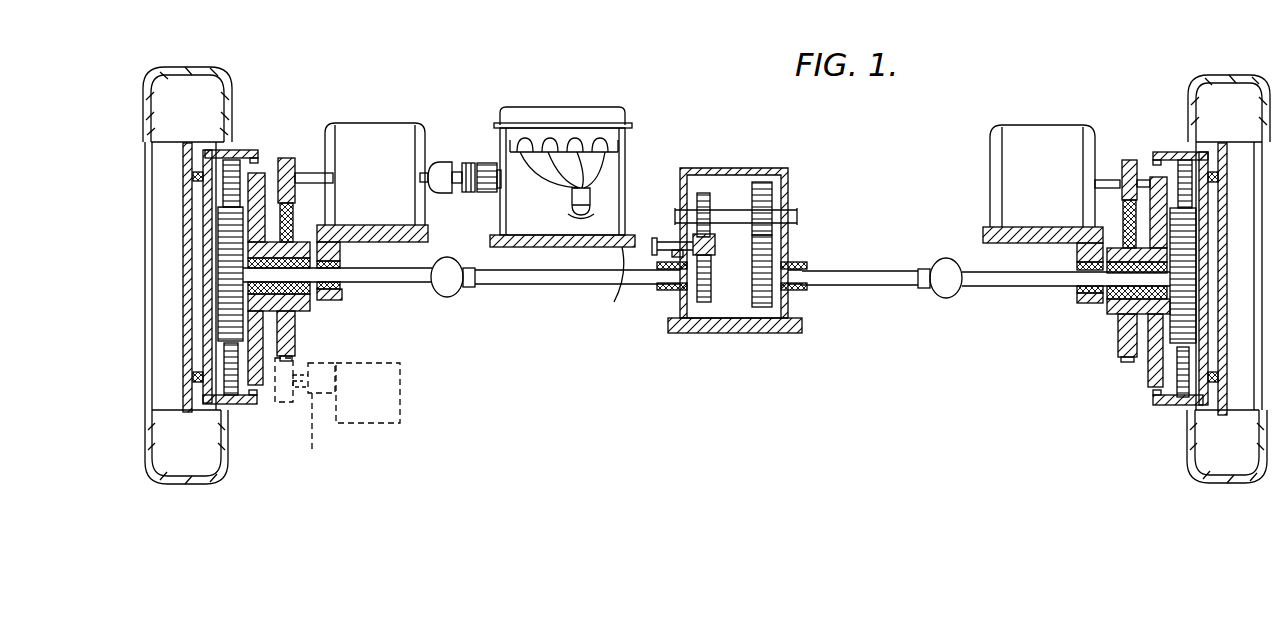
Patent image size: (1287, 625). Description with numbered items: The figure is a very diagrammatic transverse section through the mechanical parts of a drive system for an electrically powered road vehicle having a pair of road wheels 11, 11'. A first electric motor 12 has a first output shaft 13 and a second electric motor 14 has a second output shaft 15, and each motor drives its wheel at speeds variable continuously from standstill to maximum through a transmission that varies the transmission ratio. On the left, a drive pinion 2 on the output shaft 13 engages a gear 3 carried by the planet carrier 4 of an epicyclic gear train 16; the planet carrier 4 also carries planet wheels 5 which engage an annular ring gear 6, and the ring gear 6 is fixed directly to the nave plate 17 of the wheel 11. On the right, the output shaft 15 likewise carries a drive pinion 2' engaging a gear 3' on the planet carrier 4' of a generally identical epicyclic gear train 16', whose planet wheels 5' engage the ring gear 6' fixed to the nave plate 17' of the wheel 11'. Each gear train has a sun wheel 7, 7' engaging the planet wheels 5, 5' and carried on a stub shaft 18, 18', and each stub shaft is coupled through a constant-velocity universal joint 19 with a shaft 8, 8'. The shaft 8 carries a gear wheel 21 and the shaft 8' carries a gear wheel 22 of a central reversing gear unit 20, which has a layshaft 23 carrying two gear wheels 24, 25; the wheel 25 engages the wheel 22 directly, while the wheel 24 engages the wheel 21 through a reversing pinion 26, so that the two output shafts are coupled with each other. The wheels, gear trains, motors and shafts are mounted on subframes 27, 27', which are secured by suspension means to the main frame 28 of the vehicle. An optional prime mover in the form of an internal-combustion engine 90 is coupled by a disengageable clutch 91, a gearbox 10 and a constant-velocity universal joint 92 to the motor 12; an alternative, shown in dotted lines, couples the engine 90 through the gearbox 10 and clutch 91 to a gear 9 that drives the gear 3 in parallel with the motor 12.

The drive pinion 2 is at (292, 179).
The drive pinion 2' is at (1121, 182).
The gear 3 is at (295, 336).
The gear 3' is at (1108, 338).
The planet carrier 4 is at (291, 279).
The planet carrier 4' is at (1115, 282).
The planet wheels 5 is at (250, 166).
The planet wheels 5' is at (1168, 165).
The annular ring gear 6 is at (231, 252).
The annular ring gear 6' is at (1180, 243).
The sun wheel 7 is at (203, 301).
The sun wheel 7' is at (1211, 252).
The shaft 8 is at (638, 301).
The shaft 8' is at (860, 300).
The gear 9 is at (279, 403).
The gearbox 10 is at (486, 160).
The road wheel 11 is at (187, 300).
The road wheel 11' is at (1228, 302).
The first electric motor 12 is at (385, 133).
The first output shaft 13 is at (312, 178).
The second electric motor 14 is at (1034, 137).
The second output shaft 15 is at (1096, 186).
The epicyclic gear train 16 is at (237, 423).
The epicyclic gear train 16' is at (1147, 385).
The nave plate 17 is at (183, 298).
The nave plate 17' is at (1224, 299).
The stub shaft 18 is at (337, 300).
The stub shaft 18' is at (1066, 302).
The constant-velocity universal joint 19 is at (452, 288).
The reversing gear unit 20 is at (741, 168).
The gear wheel 21 is at (703, 304).
The gear wheel 22 is at (766, 308).
The layshaft 23 is at (793, 214).
The gear wheel 24 is at (702, 192).
The gear wheel 25 is at (765, 190).
The reversing pinion 26 is at (715, 250).
The subframe 27 is at (372, 262).
The subframe 27' is at (1017, 252).
The main frame 28 is at (670, 327).
The internal-combustion engine 90 is at (550, 107).
The disengageable clutch 91 is at (467, 164).
The constant-velocity universal joint 92 is at (436, 183).